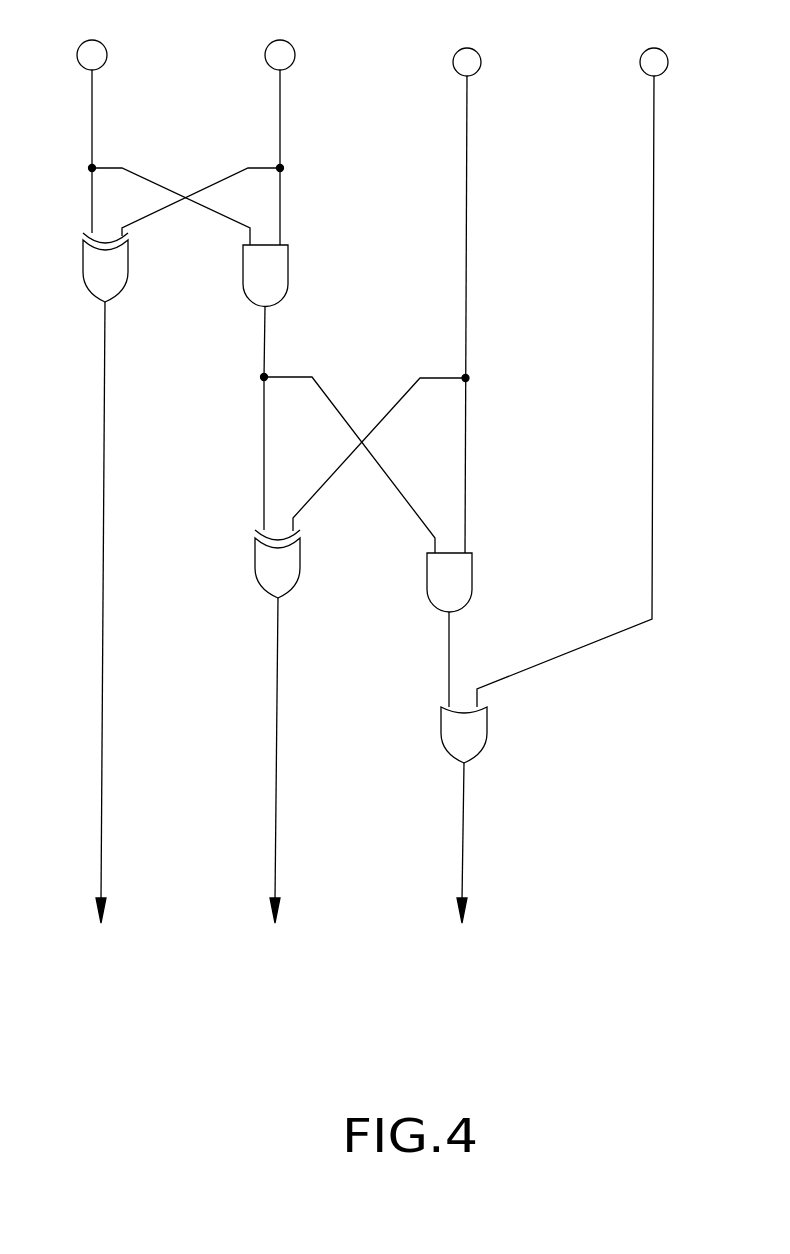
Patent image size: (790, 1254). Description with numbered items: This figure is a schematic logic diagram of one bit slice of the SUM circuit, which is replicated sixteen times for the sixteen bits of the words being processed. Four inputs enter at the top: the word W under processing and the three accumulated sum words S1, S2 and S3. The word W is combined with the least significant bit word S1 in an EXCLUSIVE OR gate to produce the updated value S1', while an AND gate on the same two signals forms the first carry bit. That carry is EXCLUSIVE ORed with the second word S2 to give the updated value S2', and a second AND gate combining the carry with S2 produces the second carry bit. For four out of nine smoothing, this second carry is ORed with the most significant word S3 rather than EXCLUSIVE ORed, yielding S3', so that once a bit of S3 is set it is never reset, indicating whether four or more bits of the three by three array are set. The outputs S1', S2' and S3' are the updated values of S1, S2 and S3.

The input word W is at (92, 119).
The least significant bit sum word S1 is at (281, 125).
The second sum word S2 is at (470, 282).
The most significant bit sum word S3 is at (575, 359).
The updated least significant sum word S1' is at (100, 636).
The updated second sum word S2' is at (274, 784).
The updated most significant sum word S3' is at (469, 867).